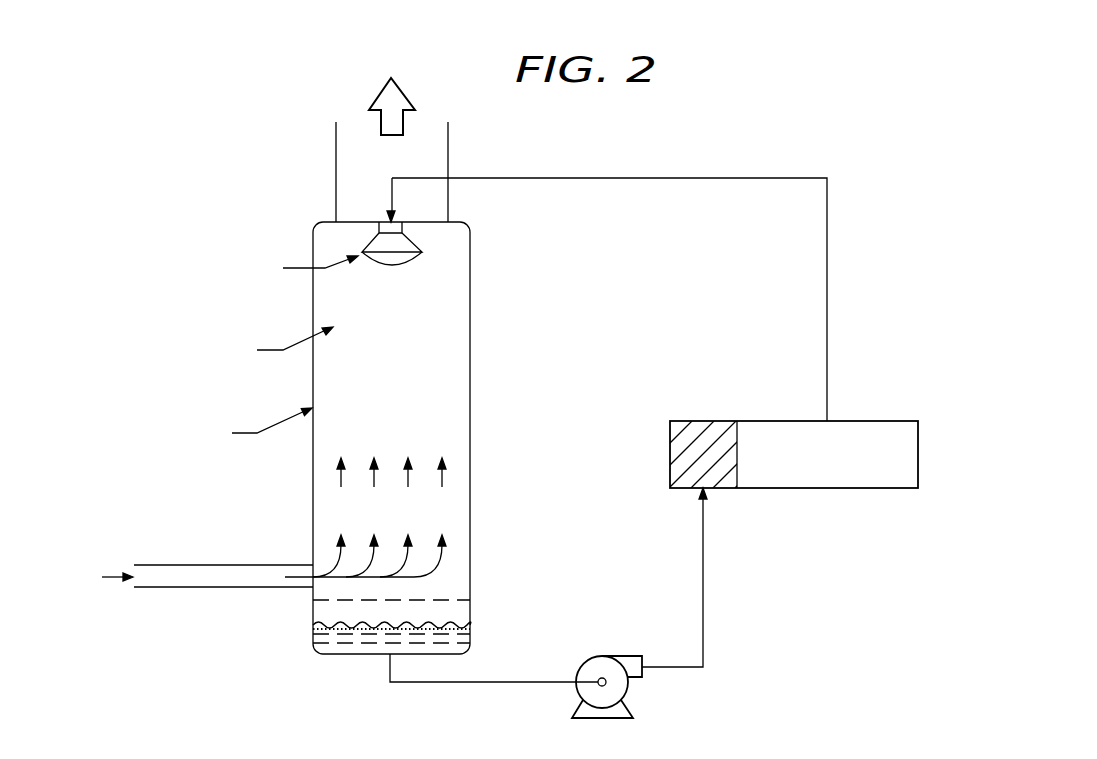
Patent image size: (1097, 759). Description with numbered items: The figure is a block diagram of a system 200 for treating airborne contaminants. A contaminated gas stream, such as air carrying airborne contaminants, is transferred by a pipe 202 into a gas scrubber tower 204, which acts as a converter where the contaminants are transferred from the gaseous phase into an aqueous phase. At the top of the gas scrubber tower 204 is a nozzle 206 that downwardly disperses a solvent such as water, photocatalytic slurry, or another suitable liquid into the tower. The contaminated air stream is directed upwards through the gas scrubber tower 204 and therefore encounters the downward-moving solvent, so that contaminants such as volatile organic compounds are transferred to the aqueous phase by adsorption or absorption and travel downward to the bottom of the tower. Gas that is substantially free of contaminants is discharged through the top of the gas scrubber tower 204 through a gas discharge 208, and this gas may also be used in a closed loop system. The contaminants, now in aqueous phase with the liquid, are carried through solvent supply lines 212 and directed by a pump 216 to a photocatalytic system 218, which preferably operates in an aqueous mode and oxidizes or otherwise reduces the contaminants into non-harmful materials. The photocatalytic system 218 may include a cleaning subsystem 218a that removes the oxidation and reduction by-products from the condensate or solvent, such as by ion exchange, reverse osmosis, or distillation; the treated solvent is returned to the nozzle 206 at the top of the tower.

The gas treatment system 200 is at (728, 142).
The pipe 202 is at (189, 588).
The gas scrubber tower 204 is at (313, 458).
The nozzle 206 is at (375, 246).
The gas discharge 208 is at (336, 138).
The solvent supply lines 212 is at (513, 680).
The pump 216 is at (610, 652).
The photocatalytic system 218 is at (862, 421).
The cleaning subsystem 218a is at (703, 421).